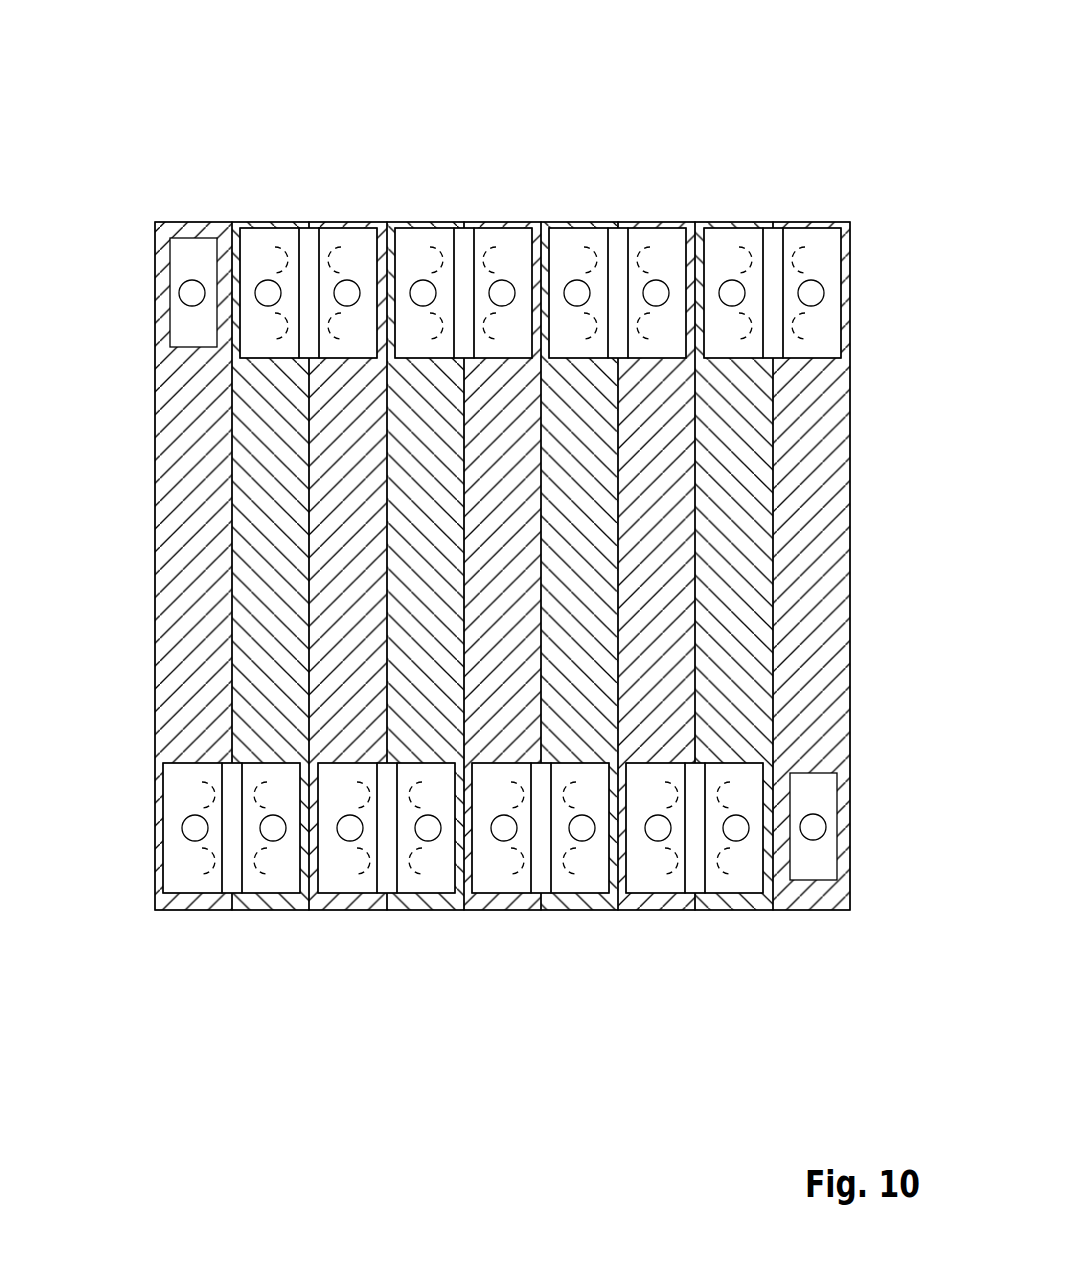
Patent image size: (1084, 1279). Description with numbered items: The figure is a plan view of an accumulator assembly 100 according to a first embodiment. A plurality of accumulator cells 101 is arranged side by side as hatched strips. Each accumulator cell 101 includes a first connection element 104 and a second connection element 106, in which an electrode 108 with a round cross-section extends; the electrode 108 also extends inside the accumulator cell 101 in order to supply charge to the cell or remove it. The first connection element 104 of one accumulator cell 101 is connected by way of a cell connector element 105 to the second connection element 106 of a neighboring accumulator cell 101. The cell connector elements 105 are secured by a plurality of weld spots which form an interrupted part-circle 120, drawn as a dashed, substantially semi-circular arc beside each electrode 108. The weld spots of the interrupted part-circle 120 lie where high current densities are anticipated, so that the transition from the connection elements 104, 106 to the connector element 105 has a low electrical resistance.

The accumulator assembly 100 is at (878, 95).
The accumulator cell 101 is at (400, 565).
The first connection element 104 is at (335, 238).
The cell connector element 105 is at (307, 216).
The second connection element 106 is at (280, 240).
The electrode 108 is at (268, 293).
The interrupted part-circle 120 is at (265, 258).